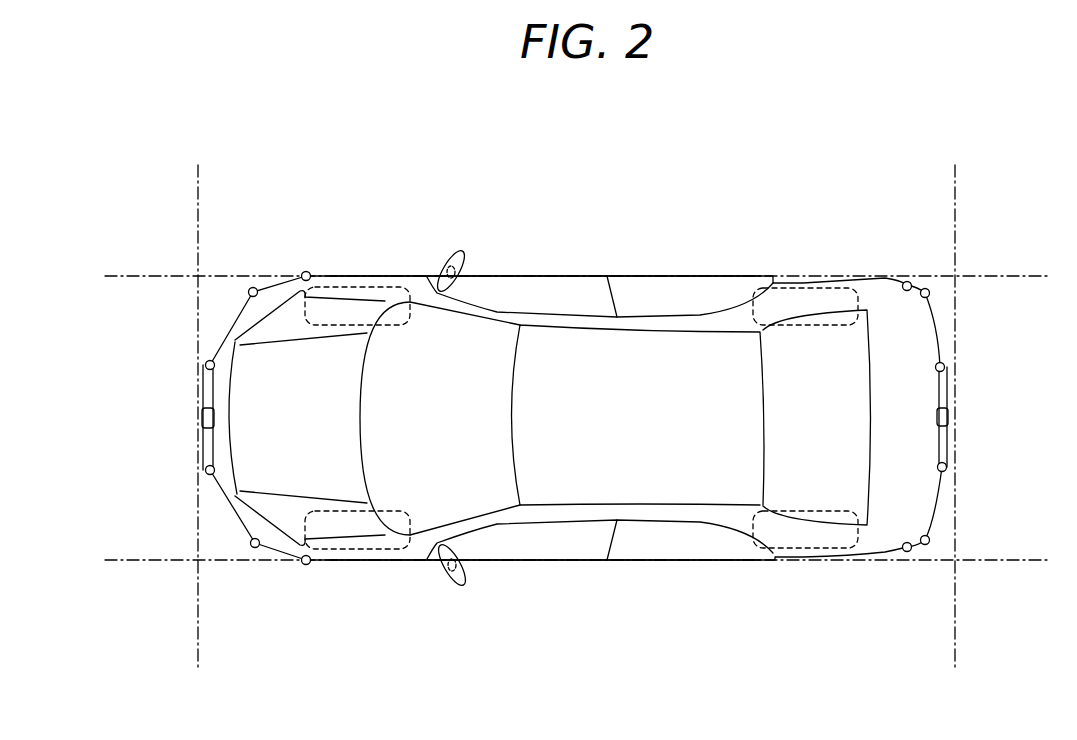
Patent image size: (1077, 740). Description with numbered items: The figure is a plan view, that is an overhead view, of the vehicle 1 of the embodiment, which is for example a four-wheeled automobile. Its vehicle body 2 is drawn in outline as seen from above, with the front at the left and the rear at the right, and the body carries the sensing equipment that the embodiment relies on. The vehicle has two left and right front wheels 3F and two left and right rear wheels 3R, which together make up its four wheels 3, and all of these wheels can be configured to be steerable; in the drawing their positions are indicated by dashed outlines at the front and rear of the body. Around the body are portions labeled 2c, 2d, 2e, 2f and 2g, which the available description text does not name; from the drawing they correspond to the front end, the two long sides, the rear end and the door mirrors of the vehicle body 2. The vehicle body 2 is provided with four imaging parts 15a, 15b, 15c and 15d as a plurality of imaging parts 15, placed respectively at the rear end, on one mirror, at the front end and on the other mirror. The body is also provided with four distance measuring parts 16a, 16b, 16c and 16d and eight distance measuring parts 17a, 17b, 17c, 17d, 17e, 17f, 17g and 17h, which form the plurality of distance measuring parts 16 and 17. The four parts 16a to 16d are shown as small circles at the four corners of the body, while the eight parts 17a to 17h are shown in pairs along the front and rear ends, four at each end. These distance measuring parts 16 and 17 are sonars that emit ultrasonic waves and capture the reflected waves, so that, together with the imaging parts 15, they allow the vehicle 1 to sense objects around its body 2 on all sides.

The vehicle 1 is at (700, 184).
The vehicle body 2 is at (883, 277).
The front bumper 2c is at (203, 437).
The side surface (left) 2d is at (688, 562).
The rear bumper 2e is at (950, 442).
The side surface (right) 2f is at (700, 275).
The door mirror 2g is at (466, 254).
The wheels 3 is at (581, 418).
The front wheels 3F is at (352, 288).
The rear wheels 3R is at (805, 288).
The imaging parts 15 is at (580, 436).
The imaging part 15a is at (950, 412).
The imaging part 15b is at (447, 258).
The imaging part 15c is at (203, 414).
The imaging part 15d is at (446, 590).
The distance measuring parts 16 is at (581, 405).
The distance measuring part 16a is at (906, 553).
The distance measuring part 16b is at (908, 281).
The distance measuring part 16c is at (303, 272).
The distance measuring part 16d is at (303, 564).
The distance measuring parts 17 is at (573, 384).
The distance measuring part 17a is at (930, 541).
The distance measuring part 17b is at (946, 469).
The distance measuring part 17c is at (944, 365).
The distance measuring part 17d is at (928, 290).
The distance measuring part 17e is at (249, 292).
The distance measuring part 17f is at (206, 362).
The distance measuring part 17g is at (206, 471).
The distance measuring part 17h is at (251, 543).